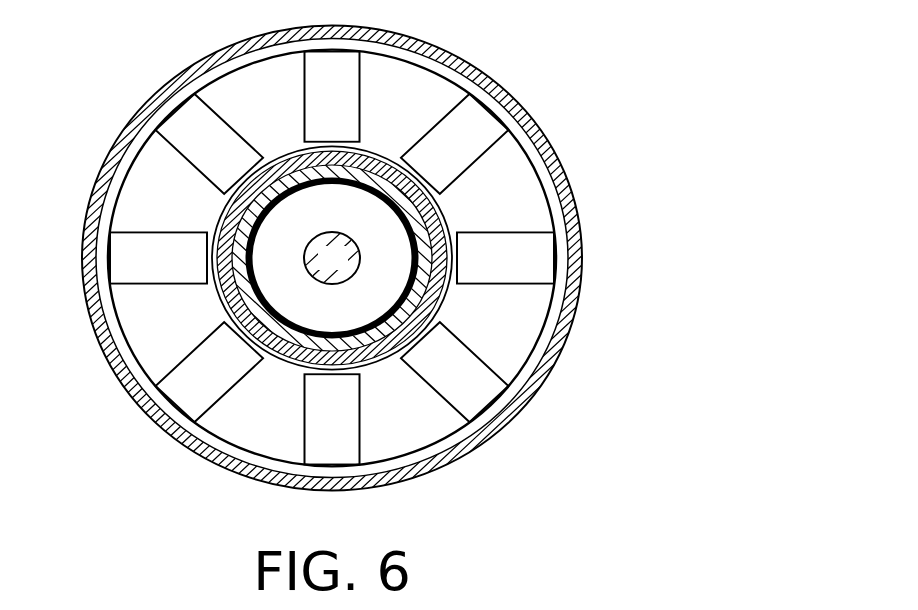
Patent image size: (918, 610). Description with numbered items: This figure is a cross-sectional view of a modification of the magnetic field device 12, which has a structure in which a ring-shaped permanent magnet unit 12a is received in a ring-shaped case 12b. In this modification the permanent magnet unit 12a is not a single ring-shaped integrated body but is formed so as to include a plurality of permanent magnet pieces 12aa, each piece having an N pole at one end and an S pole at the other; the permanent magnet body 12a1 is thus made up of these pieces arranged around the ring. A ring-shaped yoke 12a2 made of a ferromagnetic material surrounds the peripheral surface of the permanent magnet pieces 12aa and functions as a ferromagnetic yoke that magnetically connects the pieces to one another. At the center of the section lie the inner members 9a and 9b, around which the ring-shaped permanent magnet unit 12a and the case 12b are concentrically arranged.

The magnetic field device 12 is at (590, 68).
The permanent magnet unit 12a is at (212, 67).
The permanent magnet body 12a1 is at (426, 465).
The yoke 12a2 is at (448, 220).
The permanent magnet pieces 12aa is at (450, 133).
The case 12b is at (120, 132).
The rotating shaft 9a is at (319, 270).
The bearing sleeve 9b is at (344, 224).